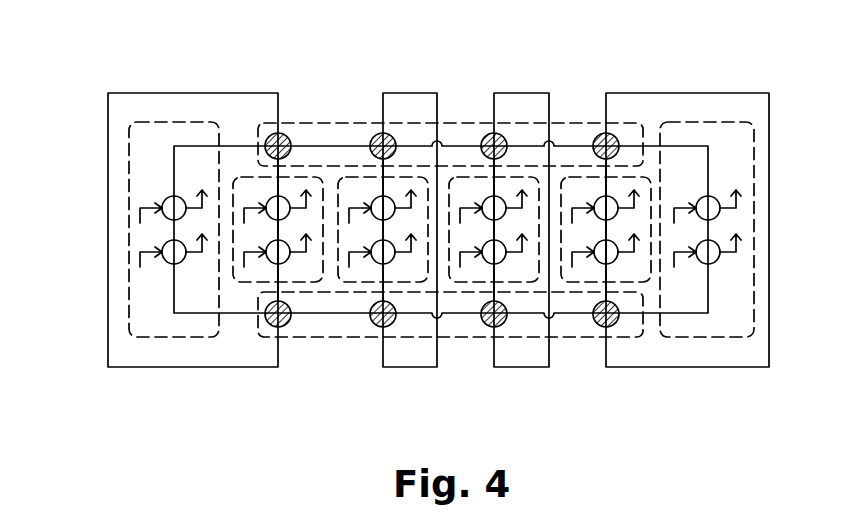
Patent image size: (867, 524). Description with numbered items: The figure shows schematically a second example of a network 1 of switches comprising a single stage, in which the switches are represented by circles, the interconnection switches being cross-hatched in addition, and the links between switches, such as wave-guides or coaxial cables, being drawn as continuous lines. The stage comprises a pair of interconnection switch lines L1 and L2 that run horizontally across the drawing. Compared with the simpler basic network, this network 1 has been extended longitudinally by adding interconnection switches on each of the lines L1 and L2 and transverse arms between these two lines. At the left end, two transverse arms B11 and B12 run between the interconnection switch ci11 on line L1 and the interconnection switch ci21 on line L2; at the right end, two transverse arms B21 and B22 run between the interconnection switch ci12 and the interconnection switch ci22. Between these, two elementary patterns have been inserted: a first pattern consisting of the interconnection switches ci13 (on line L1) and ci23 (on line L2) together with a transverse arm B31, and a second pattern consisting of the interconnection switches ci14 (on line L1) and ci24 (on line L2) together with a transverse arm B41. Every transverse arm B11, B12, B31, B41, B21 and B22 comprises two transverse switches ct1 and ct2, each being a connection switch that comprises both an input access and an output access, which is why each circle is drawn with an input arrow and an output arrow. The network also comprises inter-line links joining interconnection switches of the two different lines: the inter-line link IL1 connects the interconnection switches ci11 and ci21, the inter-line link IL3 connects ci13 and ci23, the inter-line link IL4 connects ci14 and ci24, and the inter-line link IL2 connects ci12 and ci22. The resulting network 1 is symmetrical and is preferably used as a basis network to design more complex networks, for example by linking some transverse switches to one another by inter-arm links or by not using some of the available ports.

The network of switches 1 is at (584, 46).
The inter-line link IL1 is at (108, 218).
The inter-line link IL2 is at (718, 93).
The inter-line link IL3 is at (420, 93).
The inter-line link IL4 is at (528, 93).
The interconnection switch line L1 is at (338, 123).
The interconnection switch line L2 is at (332, 337).
The transverse arm B11 is at (175, 337).
The transverse arm B12 is at (245, 176).
The transverse arm B21 is at (628, 283).
The transverse arm B22 is at (705, 337).
The transverse arm B31 is at (357, 283).
The transverse arm B41 is at (468, 283).
The transverse switch ct1 is at (169, 197).
The transverse switch ct2 is at (170, 263).
The interconnection switch ci11 is at (291, 136).
The interconnection switch ci12 is at (594, 135).
The interconnection switch ci13 is at (375, 135).
The interconnection switch ci14 is at (484, 135).
The interconnection switch ci21 is at (288, 326).
The interconnection switch ci22 is at (596, 325).
The interconnection switch ci23 is at (393, 326).
The interconnection switch ci24 is at (484, 326).